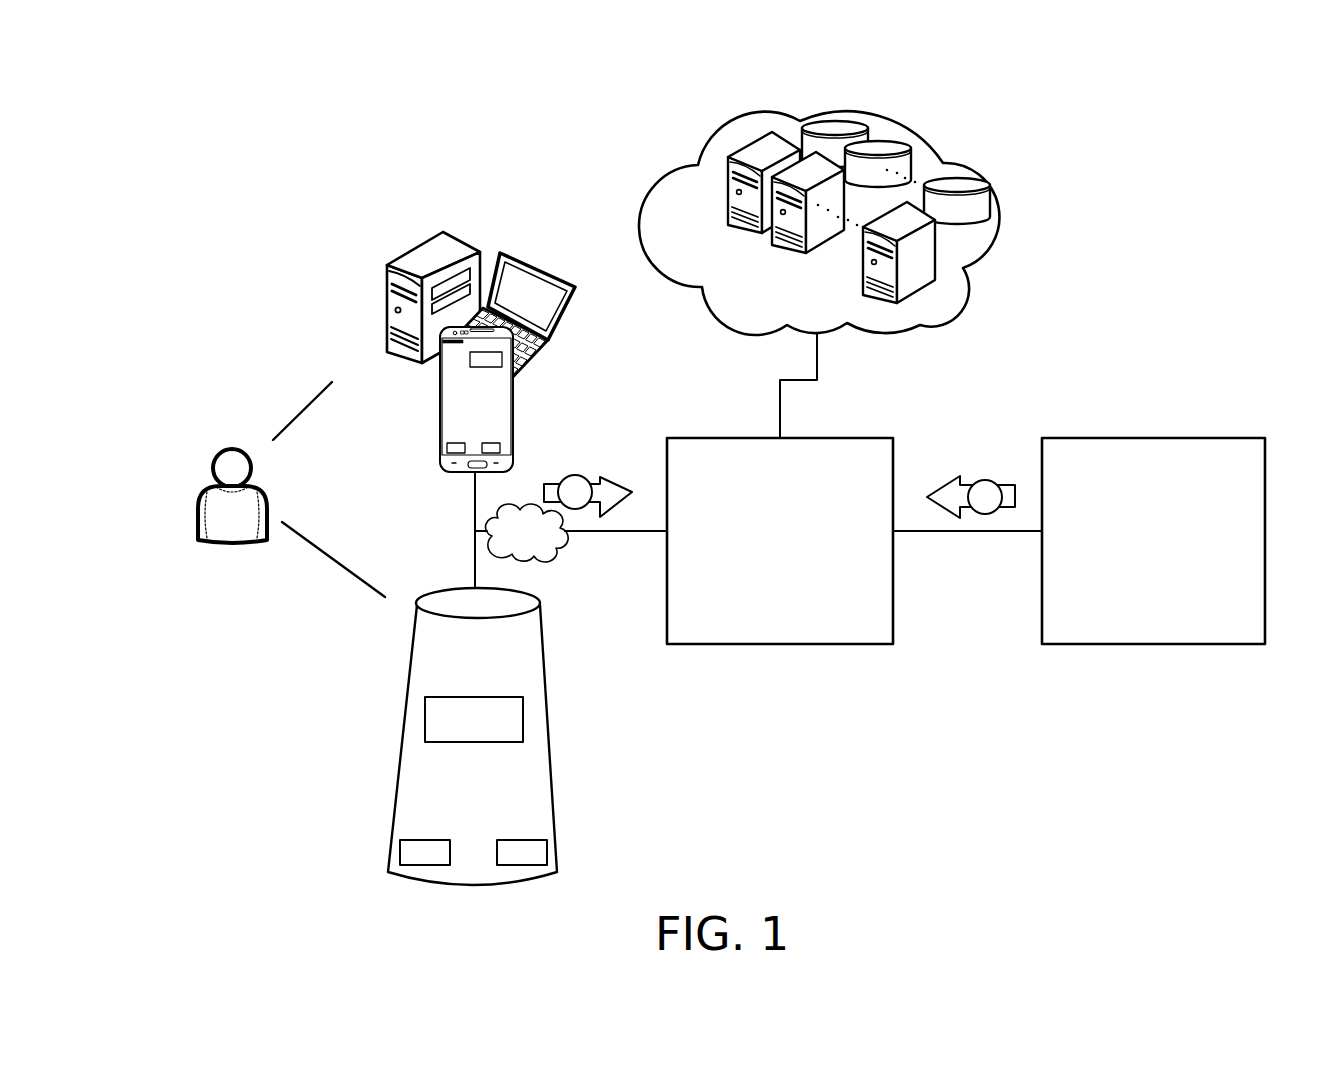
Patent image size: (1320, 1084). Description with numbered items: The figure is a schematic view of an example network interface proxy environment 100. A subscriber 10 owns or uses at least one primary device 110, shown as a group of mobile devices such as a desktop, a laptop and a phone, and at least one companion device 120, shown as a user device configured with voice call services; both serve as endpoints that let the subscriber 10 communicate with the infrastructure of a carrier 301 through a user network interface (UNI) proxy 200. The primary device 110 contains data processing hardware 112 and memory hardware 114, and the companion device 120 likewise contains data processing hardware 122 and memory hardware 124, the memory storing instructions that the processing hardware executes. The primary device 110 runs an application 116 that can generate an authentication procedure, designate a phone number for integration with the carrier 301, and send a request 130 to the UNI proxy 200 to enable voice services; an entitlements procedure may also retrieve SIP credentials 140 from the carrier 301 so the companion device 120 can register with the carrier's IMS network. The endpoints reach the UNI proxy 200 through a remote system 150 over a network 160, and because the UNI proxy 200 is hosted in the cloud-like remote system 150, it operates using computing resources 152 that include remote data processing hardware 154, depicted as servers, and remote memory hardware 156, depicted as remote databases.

The subscriber 10 is at (198, 490).
The network interface proxy environment 100 is at (1186, 84).
The primary device 110 is at (396, 363).
The data processing hardware 112 is at (447, 448).
The memory hardware 114 is at (441, 469).
The application 116 is at (462, 411).
The companion device 120 is at (474, 736).
The data processing hardware 122 is at (398, 851).
The memory hardware 124 is at (550, 851).
The request 130 is at (573, 475).
The SIP credentials 140 is at (985, 480).
The remote system 150 is at (819, 207).
The computing resources 152 is at (822, 176).
The remote data processing hardware 154 is at (759, 176).
The remote memory hardware 156 is at (828, 122).
The network 160 is at (527, 533).
The user network interface proxy 200 is at (780, 541).
The carrier 301 is at (1153, 541).